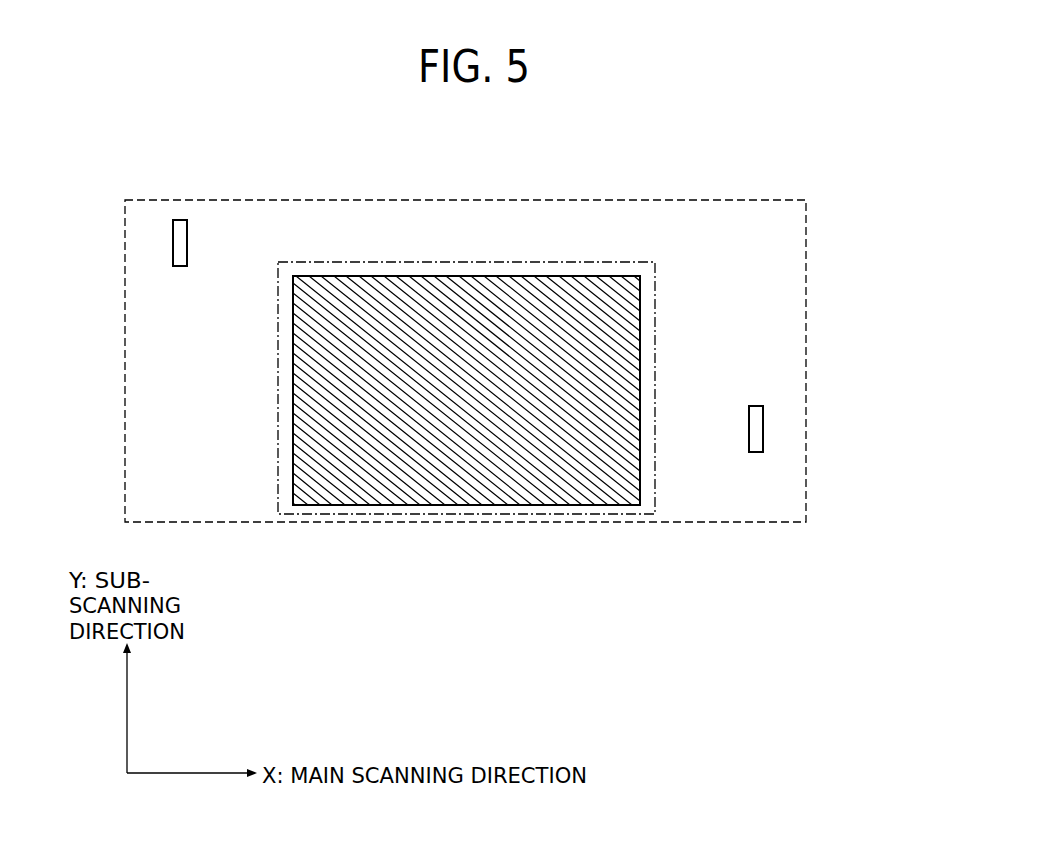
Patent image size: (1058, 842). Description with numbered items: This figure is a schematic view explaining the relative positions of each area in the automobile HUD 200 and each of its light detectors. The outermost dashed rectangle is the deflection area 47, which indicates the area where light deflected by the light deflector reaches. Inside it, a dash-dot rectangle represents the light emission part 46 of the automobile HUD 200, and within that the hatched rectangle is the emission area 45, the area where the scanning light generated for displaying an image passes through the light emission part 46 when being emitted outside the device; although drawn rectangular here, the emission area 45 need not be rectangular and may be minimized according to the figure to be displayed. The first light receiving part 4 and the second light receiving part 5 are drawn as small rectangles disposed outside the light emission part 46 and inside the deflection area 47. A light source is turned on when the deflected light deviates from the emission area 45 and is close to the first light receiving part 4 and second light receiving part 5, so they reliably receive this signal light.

The automobile HUD 200 is at (821, 154).
The first light receiving part 4 is at (180, 220).
The second light receiving part 5 is at (763, 430).
The emission area 45 is at (475, 505).
The light emission part 46 is at (628, 514).
The deflection area 47 is at (255, 522).